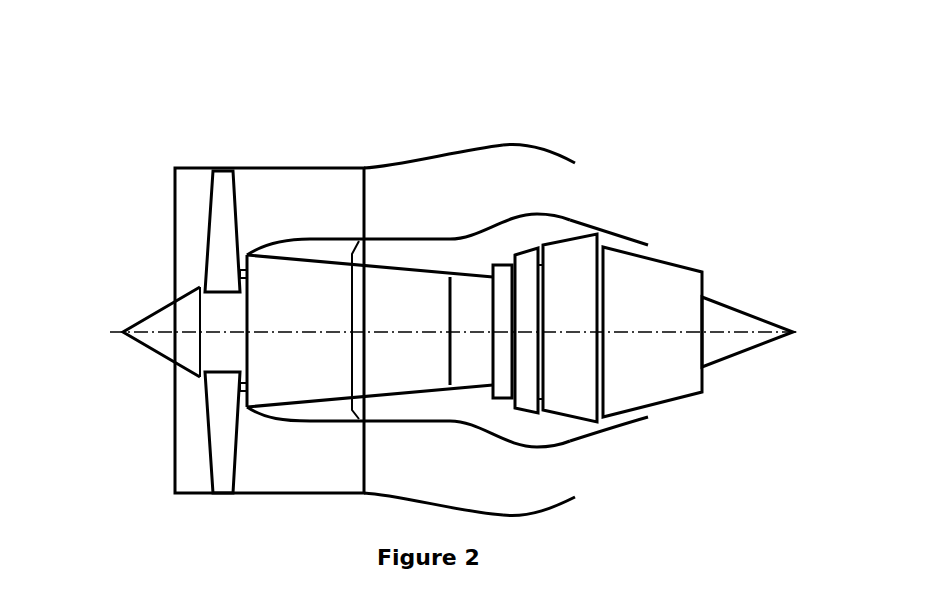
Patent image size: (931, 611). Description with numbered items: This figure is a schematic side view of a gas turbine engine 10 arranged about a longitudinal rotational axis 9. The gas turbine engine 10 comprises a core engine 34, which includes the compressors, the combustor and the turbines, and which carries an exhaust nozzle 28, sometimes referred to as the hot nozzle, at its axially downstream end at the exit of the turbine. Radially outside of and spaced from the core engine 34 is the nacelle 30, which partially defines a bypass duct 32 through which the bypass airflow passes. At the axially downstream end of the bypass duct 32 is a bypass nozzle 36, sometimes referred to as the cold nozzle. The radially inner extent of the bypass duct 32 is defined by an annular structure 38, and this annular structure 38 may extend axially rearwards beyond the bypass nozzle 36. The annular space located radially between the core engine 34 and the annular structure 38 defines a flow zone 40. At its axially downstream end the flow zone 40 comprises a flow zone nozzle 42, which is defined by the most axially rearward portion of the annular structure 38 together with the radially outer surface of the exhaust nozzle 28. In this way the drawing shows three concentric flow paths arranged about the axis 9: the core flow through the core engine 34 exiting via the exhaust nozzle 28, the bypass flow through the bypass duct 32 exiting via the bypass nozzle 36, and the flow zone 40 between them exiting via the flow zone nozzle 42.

The longitudinal rotational axis 9 is at (272, 335).
The gas turbine engine 10 is at (135, 115).
The exhaust nozzle 28 is at (703, 287).
The nacelle 30 is at (433, 158).
The bypass duct 32 is at (477, 216).
The core engine 34 is at (282, 278).
The bypass nozzle 36 is at (578, 187).
The annular structure 38 is at (622, 230).
The flow zone 40 is at (482, 266).
The flow zone nozzle 42 is at (662, 250).